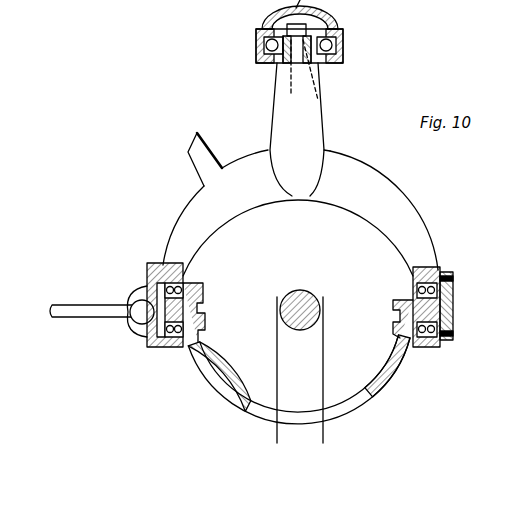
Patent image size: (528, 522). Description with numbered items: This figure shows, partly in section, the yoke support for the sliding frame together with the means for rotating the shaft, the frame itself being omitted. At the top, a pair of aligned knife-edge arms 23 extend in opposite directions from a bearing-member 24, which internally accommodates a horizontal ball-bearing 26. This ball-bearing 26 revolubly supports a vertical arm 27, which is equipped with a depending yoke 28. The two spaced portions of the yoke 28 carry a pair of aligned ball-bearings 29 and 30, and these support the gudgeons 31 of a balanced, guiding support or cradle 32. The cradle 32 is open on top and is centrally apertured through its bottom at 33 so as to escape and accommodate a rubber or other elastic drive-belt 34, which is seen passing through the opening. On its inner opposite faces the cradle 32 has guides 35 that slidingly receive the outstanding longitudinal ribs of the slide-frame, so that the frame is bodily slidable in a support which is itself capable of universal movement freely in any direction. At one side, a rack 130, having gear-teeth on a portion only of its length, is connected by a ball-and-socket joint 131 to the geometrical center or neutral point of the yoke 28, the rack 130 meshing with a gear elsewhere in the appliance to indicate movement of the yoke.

The knife-edge arms 23 is at (320, 70).
The bearing-member 24 is at (342, 46).
The horizontal ball-bearing 26 is at (258, 50).
The vertical arm 27 is at (279, 106).
The yoke 28 is at (188, 212).
The ball-bearing 29 is at (176, 348).
The ball-bearing 30 is at (433, 338).
The gudgeons 31 is at (197, 290).
The cradle 32 is at (223, 380).
The aperture 33 is at (251, 412).
The drive-belt 34 is at (326, 363).
The guides 35 is at (206, 320).
The rack 130 is at (73, 305).
The ball-and-socket joint 131 is at (137, 323).